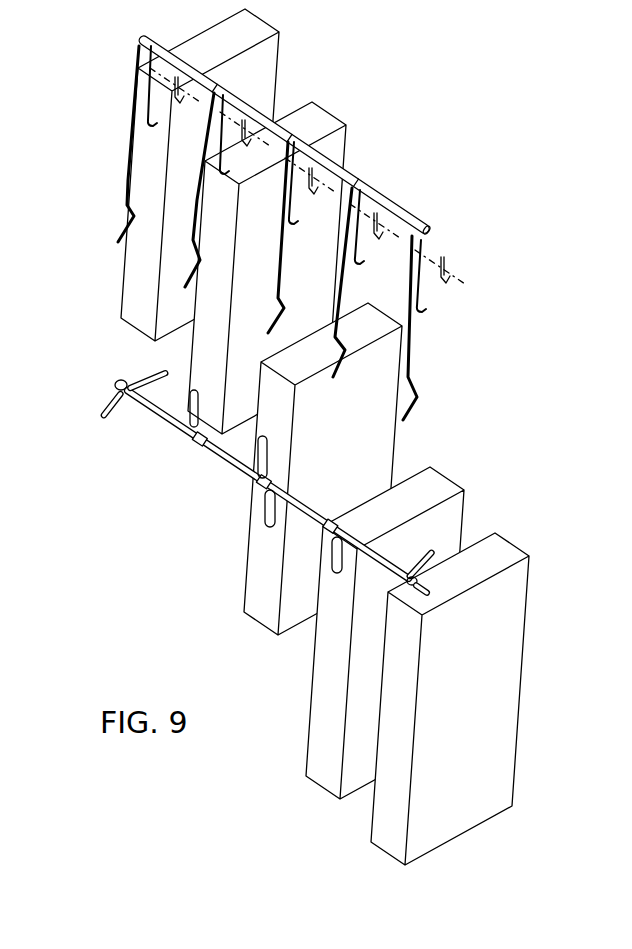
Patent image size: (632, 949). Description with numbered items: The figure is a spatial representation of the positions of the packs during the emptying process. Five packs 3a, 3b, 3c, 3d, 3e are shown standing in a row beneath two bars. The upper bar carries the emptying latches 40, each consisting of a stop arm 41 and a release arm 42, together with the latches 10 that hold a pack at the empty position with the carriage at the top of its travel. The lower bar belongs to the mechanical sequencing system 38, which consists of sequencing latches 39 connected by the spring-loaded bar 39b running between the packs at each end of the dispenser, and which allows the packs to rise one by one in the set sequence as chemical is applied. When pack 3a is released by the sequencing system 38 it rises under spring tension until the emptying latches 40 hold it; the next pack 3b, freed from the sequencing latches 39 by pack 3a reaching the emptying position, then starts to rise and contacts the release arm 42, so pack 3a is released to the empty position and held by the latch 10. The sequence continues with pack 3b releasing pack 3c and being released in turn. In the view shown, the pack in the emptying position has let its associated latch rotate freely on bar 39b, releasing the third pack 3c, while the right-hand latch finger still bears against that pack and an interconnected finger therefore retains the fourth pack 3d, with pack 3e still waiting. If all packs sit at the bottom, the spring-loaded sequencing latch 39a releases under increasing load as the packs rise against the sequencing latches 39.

The pack 3a is at (283, 43).
The pack 3b is at (325, 117).
The pack 3c is at (383, 440).
The pack 3d is at (453, 511).
The pack 3e is at (503, 550).
The latch 10 is at (174, 90).
The mechanical sequencing system 38 is at (115, 392).
The sequencing latches 39 is at (257, 468).
The spring loaded sequencing latch 39a is at (103, 417).
The bar 39b is at (188, 443).
The emptying latches 40 is at (436, 227).
The stop arm 41 is at (422, 311).
The release arm 42 is at (410, 374).